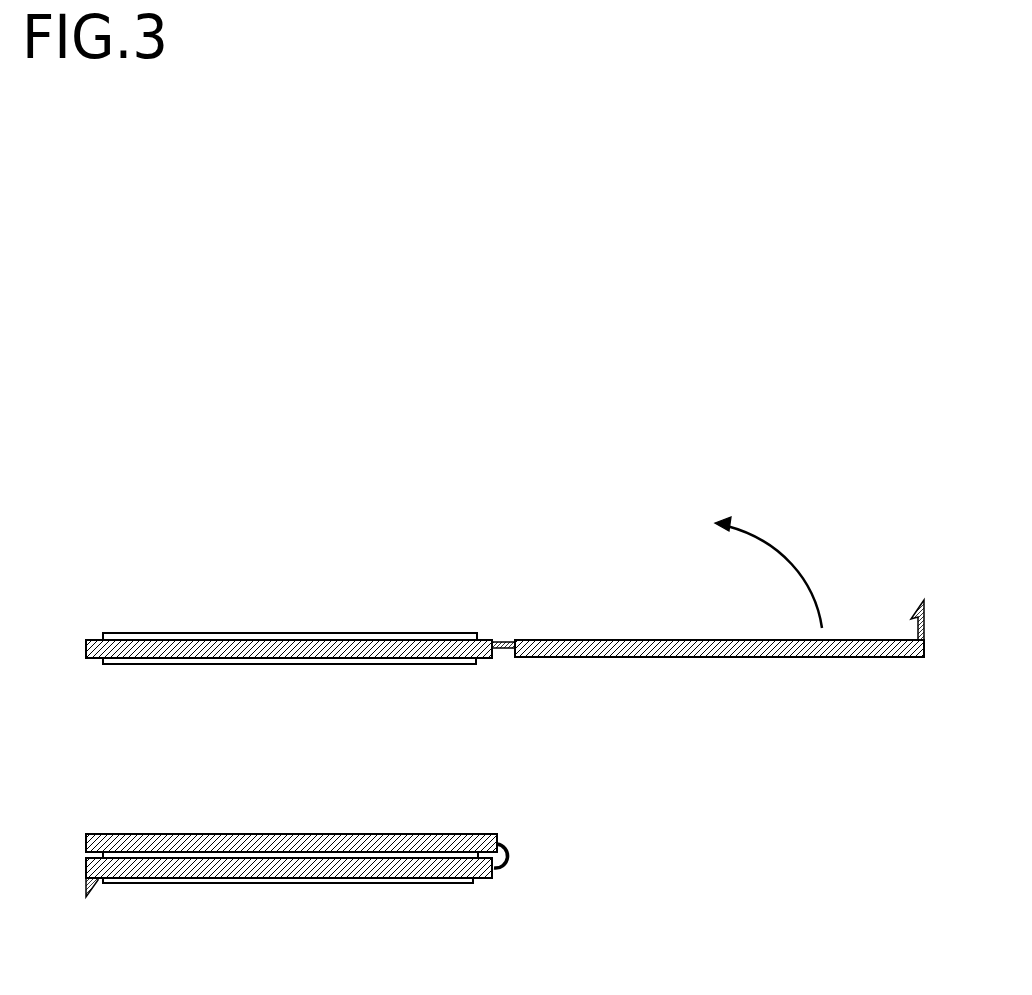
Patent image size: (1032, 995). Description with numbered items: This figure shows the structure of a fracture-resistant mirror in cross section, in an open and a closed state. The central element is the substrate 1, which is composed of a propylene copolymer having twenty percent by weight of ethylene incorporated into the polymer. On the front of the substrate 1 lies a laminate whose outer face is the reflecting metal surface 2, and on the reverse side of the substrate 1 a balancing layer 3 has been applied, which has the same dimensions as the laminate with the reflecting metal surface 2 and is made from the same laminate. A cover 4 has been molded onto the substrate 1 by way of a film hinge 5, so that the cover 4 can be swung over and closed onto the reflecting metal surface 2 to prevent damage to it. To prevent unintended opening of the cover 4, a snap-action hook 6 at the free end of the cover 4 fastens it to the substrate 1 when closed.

The substrate 1 is at (472, 661).
The reflecting metal surface 2 is at (290, 604).
The balancing layer 3 is at (289, 693).
The cover 4 is at (706, 649).
The film hinge 5 is at (503, 649).
The snap-action hook 6 is at (912, 609).